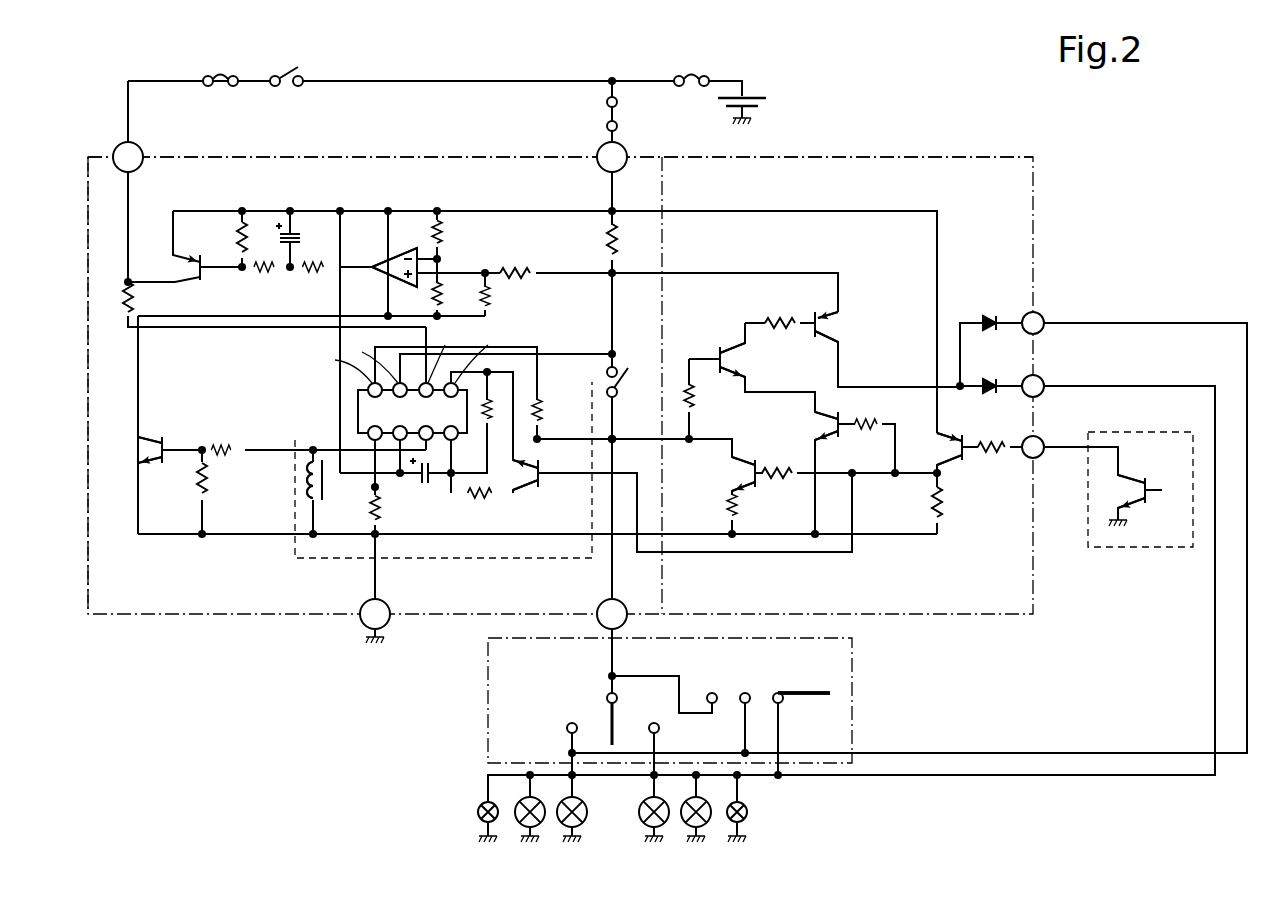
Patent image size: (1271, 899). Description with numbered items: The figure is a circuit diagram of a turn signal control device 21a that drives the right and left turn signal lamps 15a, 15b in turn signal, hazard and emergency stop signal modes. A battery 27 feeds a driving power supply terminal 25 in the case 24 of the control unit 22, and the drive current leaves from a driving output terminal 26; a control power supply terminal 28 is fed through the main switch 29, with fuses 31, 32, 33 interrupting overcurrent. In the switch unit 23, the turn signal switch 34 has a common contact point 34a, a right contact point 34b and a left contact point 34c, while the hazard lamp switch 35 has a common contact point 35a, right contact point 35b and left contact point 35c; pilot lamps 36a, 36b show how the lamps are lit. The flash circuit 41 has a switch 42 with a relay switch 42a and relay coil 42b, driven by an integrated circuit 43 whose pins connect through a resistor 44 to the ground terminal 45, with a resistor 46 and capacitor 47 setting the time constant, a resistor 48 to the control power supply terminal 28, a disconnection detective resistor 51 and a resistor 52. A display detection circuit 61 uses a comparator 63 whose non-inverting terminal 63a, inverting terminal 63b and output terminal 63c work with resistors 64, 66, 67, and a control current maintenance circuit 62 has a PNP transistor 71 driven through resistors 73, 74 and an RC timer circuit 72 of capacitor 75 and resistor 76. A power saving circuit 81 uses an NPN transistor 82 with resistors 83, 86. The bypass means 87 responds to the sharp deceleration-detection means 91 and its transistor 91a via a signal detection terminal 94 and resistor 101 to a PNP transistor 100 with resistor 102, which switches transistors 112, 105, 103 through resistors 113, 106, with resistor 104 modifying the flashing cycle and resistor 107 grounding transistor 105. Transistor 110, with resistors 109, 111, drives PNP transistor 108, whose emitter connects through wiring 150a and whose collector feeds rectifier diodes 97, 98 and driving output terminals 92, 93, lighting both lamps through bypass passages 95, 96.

The right turn signal lamps 15a is at (668, 830).
The left turn signal lamps 15b is at (560, 830).
The turn signal control device 21a is at (848, 83).
The control unit 22 is at (400, 155).
The switch unit 23 is at (488, 728).
The case 24 is at (340, 157).
The driving power supply terminal 25 is at (616, 144).
The driving output terminal 26 is at (600, 605).
The battery 27 is at (772, 104).
The control power supply terminal 28 is at (134, 146).
The main switch 29 is at (290, 72).
The fuse 31 is at (684, 76).
The fuse 32 is at (608, 112).
The fuse 33 is at (212, 76).
The turn signal switch 34 is at (605, 718).
The common contact point 34a is at (618, 698).
The right contact point 34b is at (660, 729).
The left contact point 34c is at (567, 729).
The hazard lamp switch 35 is at (800, 690).
The common contact point 35a is at (712, 693).
The right contact point 35b is at (783, 710).
The left contact point 35c is at (745, 693).
The pilot lamp 36a is at (748, 812).
The pilot lamp 36b is at (478, 812).
The flash circuit 41 is at (468, 600).
The switch 42 is at (630, 370).
The relay switch 42a is at (615, 432).
The relay coil 42b is at (310, 492).
The integrated circuit 43 is at (356, 414).
The resistor 44 is at (373, 512).
The ground terminal 45 is at (362, 605).
The resistor 46 is at (482, 420).
The capacitor 47 is at (426, 490).
The resistor 48 is at (136, 300).
The disconnection detective resistor 51 is at (608, 258).
The resistor 52 is at (540, 418).
The display detection circuit 61 is at (437, 203).
The control current maintenance circuit 62 is at (242, 203).
The comparator 63 is at (375, 262).
The non-inverting terminal 63a is at (417, 282).
The inverting terminal 63b is at (435, 250).
The output terminal 63c is at (386, 282).
The resistor 64 is at (515, 270).
The resistor 66 is at (490, 298).
The resistor 67 is at (440, 296).
The PNP transistor 71 is at (203, 286).
The RC timer circuit 72 is at (290, 203).
The resistor 73 is at (268, 272).
The resistor 74 is at (317, 272).
The capacitor 75 is at (296, 236).
The resistor 76 is at (238, 245).
The power saving circuit 81 is at (206, 446).
The NPN transistor 82 is at (166, 440).
The resistor 83 is at (225, 444).
The resistor 86 is at (207, 486).
The bypass means 87 is at (908, 157).
The sharp deceleration-detection means 91 is at (1140, 547).
The transistor 91a is at (1132, 470).
The driving output terminal 92 is at (1042, 316).
The driving output terminal 93 is at (1042, 378).
The signal detection terminal 94 is at (1042, 438).
The bypass passage 95 is at (1130, 323).
The bypass passage 96 is at (1128, 386).
The rectifier diode 97 is at (990, 314).
The rectifier diode 98 is at (990, 378).
The PNP transistor 100 is at (950, 432).
The resistor 101 is at (994, 465).
The resistor 102 is at (948, 500).
The transistor 103 is at (528, 500).
The resistor 104 is at (478, 500).
The NPN transistor 105 is at (748, 458).
The resistor 106 is at (780, 495).
The resistor 107 is at (728, 512).
The PNP transistor 108 is at (830, 310).
The resistor 109 is at (782, 330).
The transistor 110 is at (725, 348).
The resistor 111 is at (694, 402).
The transistor 112 is at (833, 420).
The resistor 113 is at (866, 435).
The wiring 150a is at (768, 272).